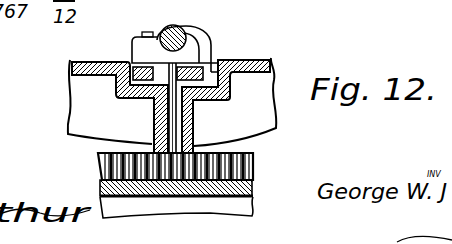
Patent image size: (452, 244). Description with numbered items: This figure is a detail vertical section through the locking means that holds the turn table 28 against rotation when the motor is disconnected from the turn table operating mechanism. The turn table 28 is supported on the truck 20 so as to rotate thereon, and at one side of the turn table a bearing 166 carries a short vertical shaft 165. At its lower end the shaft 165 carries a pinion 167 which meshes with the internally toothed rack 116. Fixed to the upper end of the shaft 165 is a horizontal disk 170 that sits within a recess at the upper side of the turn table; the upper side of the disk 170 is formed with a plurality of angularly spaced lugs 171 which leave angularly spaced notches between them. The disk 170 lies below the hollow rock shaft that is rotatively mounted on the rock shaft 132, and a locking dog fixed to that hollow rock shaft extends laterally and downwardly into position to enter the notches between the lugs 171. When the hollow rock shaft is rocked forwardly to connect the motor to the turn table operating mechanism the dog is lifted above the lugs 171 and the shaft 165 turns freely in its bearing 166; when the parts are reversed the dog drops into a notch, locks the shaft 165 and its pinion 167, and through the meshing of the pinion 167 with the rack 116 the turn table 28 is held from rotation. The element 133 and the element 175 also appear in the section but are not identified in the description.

The truck 20 is at (246, 205).
The turn table 28 is at (271, 58).
The internally toothed rack 116 is at (98, 157).
The rock shaft 132 is at (186, 30).
The brush arm 133 is at (190, 8).
The short vertical shaft 165 is at (169, 109).
The bearing 166 is at (193, 125).
The pinion 167 is at (185, 163).
The horizontal disk 170 is at (117, 86).
The lugs 171 is at (133, 61).
The cap 175 is at (212, 52).